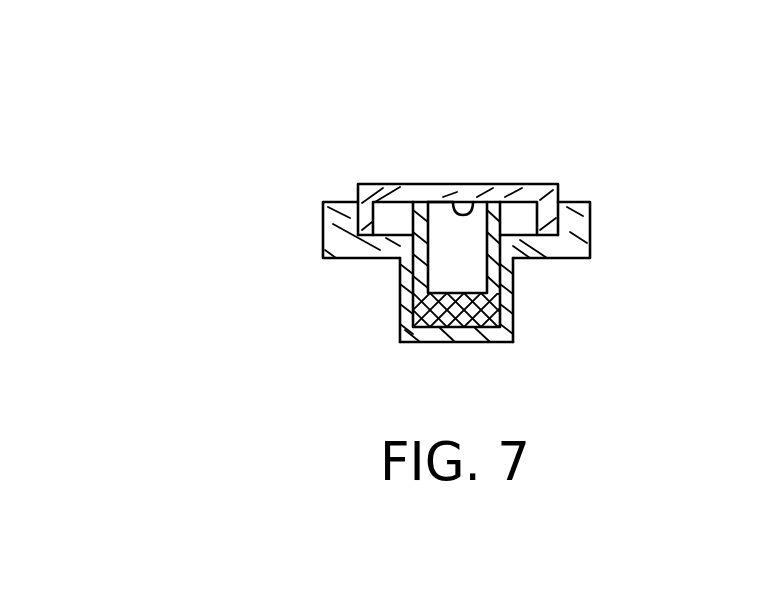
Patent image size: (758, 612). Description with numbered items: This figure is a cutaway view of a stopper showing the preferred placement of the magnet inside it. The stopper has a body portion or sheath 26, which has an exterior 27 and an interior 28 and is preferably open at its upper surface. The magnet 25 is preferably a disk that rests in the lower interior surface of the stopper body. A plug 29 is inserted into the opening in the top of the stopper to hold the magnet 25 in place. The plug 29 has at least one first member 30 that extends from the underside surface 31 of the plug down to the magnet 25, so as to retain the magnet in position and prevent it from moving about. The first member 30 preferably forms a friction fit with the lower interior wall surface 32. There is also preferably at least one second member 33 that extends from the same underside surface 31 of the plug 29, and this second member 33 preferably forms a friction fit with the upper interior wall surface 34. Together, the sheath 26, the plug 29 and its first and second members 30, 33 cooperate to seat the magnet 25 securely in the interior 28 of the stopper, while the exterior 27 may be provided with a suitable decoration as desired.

The magnet 25 is at (475, 316).
The body portion or sheath 26 is at (557, 258).
The exterior 27 is at (401, 278).
The interior 28 is at (457, 243).
The plug 29 is at (570, 120).
The first member 30 is at (437, 213).
The underside surface 31 is at (474, 213).
The lower interior wall surface 32 is at (513, 282).
The second member 33 is at (548, 230).
The upper interior wall surface 34 is at (327, 218).